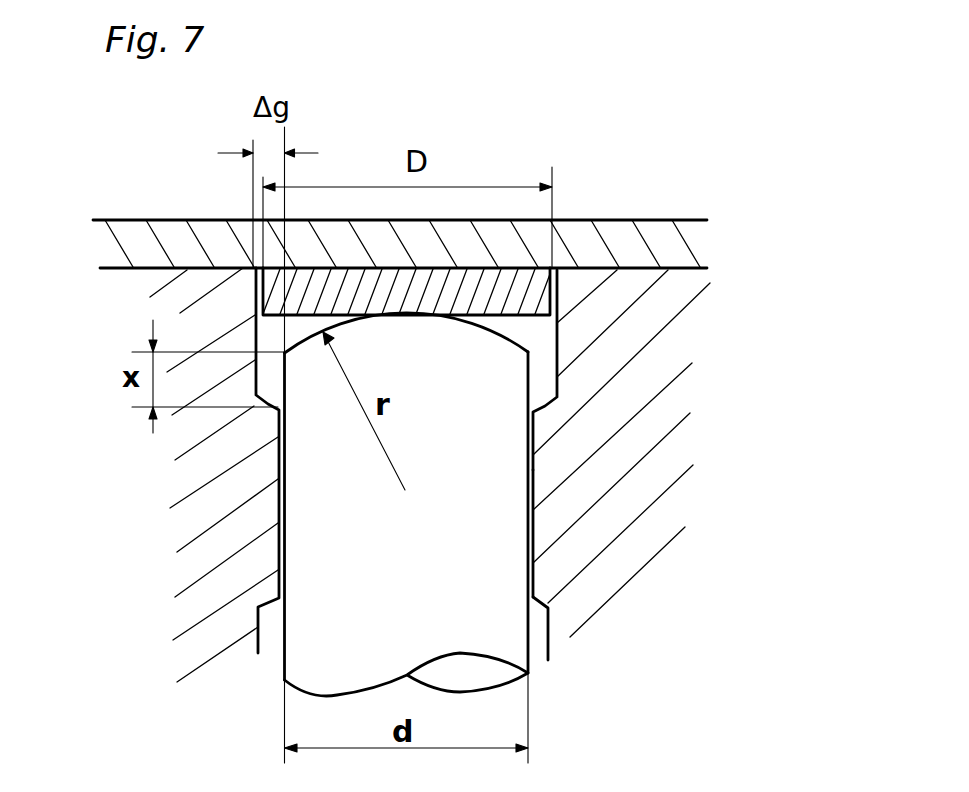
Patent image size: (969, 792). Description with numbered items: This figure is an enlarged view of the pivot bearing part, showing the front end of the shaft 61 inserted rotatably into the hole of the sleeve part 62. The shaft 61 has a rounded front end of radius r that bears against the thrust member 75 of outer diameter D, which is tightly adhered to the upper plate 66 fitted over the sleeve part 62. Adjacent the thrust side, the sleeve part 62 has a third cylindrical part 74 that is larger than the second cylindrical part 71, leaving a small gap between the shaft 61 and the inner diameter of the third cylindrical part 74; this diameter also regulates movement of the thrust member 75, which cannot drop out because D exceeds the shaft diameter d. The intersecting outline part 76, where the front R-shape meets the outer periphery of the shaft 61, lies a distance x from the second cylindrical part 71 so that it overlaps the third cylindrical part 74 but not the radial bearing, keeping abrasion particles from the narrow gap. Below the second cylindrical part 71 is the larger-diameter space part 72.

The shaft 61 is at (318, 628).
The sleeve part 62 is at (217, 545).
The upper plate 66 is at (633, 238).
The second cylindrical part of the sleeve part 71 is at (533, 498).
The space part 72 is at (538, 630).
The third cylindrical part of the sleeve part 74 is at (557, 383).
The thrust member 75 is at (488, 278).
The intersecting outline part 76 is at (533, 351).